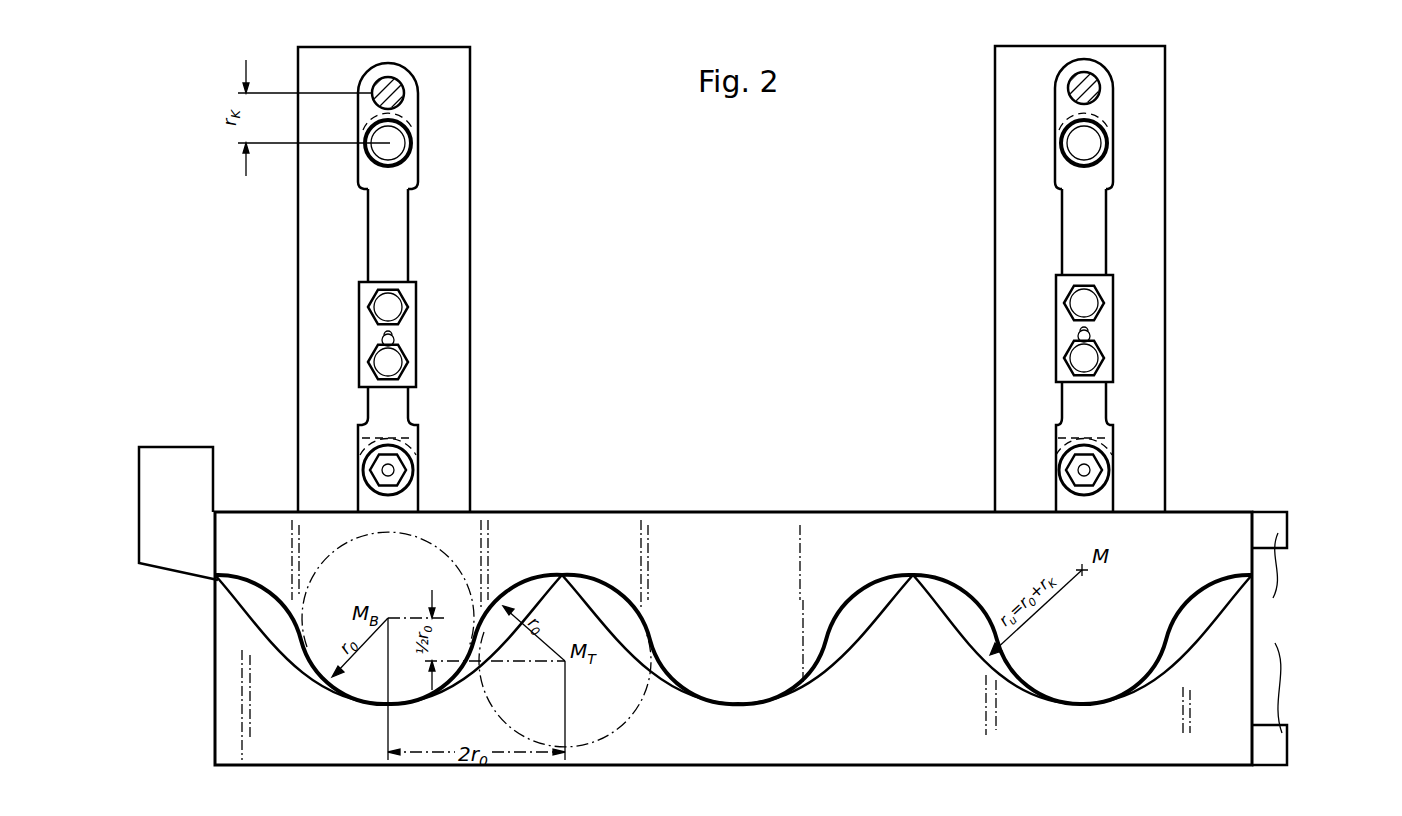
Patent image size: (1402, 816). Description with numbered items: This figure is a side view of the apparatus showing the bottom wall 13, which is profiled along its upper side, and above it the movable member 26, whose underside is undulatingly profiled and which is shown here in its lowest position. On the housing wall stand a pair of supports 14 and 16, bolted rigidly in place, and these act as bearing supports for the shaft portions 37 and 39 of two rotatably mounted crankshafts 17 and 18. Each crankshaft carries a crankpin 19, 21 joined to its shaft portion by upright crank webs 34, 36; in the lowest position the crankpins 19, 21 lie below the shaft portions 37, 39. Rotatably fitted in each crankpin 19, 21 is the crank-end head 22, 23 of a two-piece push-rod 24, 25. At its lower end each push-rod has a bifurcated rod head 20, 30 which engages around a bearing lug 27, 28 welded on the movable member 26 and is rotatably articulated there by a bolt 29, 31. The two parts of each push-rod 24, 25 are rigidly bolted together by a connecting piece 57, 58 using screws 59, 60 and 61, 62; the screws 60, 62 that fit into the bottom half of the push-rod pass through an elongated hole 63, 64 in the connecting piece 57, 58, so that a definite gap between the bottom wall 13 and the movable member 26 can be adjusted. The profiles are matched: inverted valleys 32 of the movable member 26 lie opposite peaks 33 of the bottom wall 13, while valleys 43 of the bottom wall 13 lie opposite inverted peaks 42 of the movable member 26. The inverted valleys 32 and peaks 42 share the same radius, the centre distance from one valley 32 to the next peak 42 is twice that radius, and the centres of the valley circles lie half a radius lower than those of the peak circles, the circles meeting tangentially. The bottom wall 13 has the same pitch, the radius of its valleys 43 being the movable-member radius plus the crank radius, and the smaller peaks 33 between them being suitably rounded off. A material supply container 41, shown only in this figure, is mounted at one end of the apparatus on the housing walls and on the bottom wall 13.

The bottom wall 13 is at (230, 653).
The support 14 is at (460, 240).
The support 16 is at (1003, 228).
The crankshaft 17 is at (417, 105).
The crankshaft 18 is at (1115, 110).
The crankpin 19 is at (375, 153).
The bifurcated rod head 20 is at (412, 420).
The crankpin 21 is at (1090, 143).
The crank-end head 22 is at (408, 184).
The crank-end head 23 is at (1062, 178).
The push-rod 24 is at (410, 232).
The push-rod 25 is at (1062, 242).
The movable member 26 is at (531, 512).
The bearing lug 27 is at (410, 502).
The bearing lug 28 is at (1063, 512).
The bolt 29 is at (376, 470).
The bifurcated rod head 30 is at (1062, 403).
The bolt 31 is at (1078, 468).
The inverted valley 32 is at (218, 578).
The peak 33 is at (225, 590).
The crank web 34 is at (408, 120).
The crank web 36 is at (1058, 111).
The shaft portion 37 is at (373, 86).
The shaft portion 39 is at (1068, 88).
The material supply container 41 is at (177, 447).
The inverted peak 42 is at (338, 698).
The valley 43 is at (375, 710).
The connecting piece 57 is at (359, 292).
The connecting piece 58 is at (1115, 333).
The screw 59 is at (397, 302).
The screw 60 is at (397, 360).
The screw 61 is at (1087, 305).
The screw 62 is at (1090, 355).
The elongated hole 63 is at (382, 340).
The elongated hole 64 is at (1078, 333).